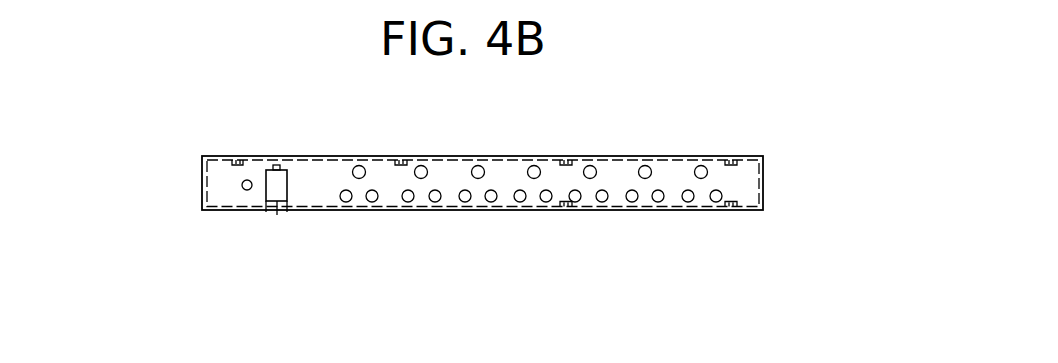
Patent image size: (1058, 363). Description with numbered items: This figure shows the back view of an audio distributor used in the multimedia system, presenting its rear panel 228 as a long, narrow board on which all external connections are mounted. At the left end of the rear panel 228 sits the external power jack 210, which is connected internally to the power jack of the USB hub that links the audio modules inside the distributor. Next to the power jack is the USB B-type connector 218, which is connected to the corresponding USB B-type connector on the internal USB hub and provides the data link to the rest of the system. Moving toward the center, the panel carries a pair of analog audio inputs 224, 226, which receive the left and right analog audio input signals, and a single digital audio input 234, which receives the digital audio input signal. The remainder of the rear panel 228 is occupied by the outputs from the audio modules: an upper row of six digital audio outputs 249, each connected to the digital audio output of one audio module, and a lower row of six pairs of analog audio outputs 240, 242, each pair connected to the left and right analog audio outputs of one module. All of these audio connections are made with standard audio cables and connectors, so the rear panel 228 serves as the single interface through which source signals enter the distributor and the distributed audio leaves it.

The external power jack 210 is at (242, 185).
The USB B-type connector 218 is at (277, 215).
The analog audio input 224 is at (346, 202).
The analog audio input 226 is at (371, 202).
The rear panel 228 is at (781, 184).
The digital audio input 234 is at (360, 166).
The analog audio output 240 is at (464, 202).
The analog audio output 242 is at (491, 202).
The digital audio output 249 is at (533, 166).